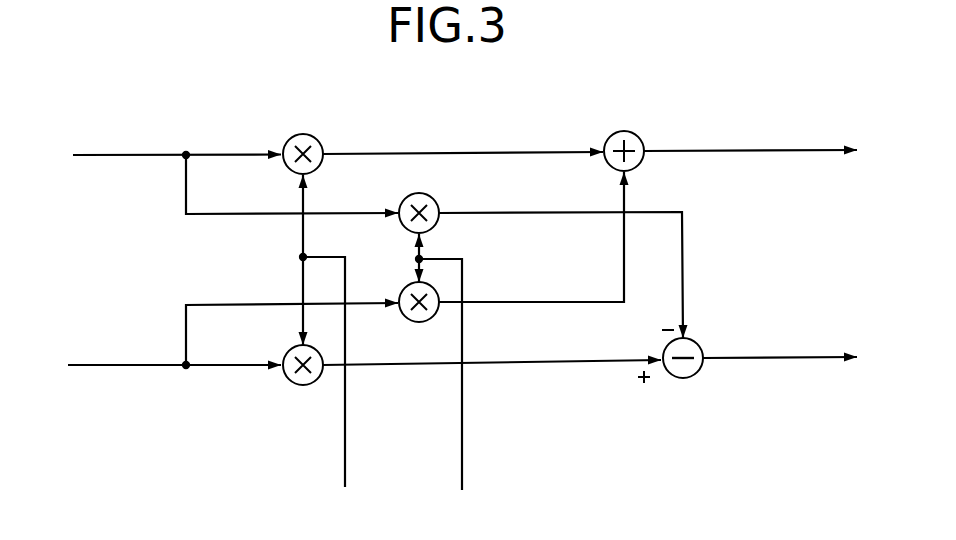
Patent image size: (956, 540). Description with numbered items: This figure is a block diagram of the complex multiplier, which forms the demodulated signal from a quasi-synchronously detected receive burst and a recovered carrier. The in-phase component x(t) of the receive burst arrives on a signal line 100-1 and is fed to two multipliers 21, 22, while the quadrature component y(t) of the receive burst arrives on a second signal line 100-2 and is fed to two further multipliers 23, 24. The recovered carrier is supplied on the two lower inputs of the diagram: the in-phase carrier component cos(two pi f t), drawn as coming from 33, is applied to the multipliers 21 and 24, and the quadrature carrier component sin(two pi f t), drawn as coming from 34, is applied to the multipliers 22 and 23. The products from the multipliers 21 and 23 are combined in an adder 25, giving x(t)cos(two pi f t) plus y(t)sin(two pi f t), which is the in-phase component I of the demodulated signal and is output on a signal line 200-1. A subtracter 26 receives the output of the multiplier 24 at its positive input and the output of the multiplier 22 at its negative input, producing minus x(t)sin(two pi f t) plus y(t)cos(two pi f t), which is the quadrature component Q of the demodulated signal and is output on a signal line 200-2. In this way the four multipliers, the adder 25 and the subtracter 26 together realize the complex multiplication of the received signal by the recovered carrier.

The signal line 100-1 is at (100, 157).
The second input signal 100-2 is at (80, 364).
The multiplier 21 is at (316, 140).
The multiplier 22 is at (433, 200).
The multiplier 23 is at (425, 320).
The multiplier 24 is at (290, 383).
The adder 25 is at (632, 133).
The subtracter 26 is at (680, 380).
The signal line 200-1 is at (778, 148).
The signal line 200-2 is at (800, 330).
The coefficient source (from 33) 33 is at (322, 390).
The coefficient source (from 34) 34 is at (500, 391).